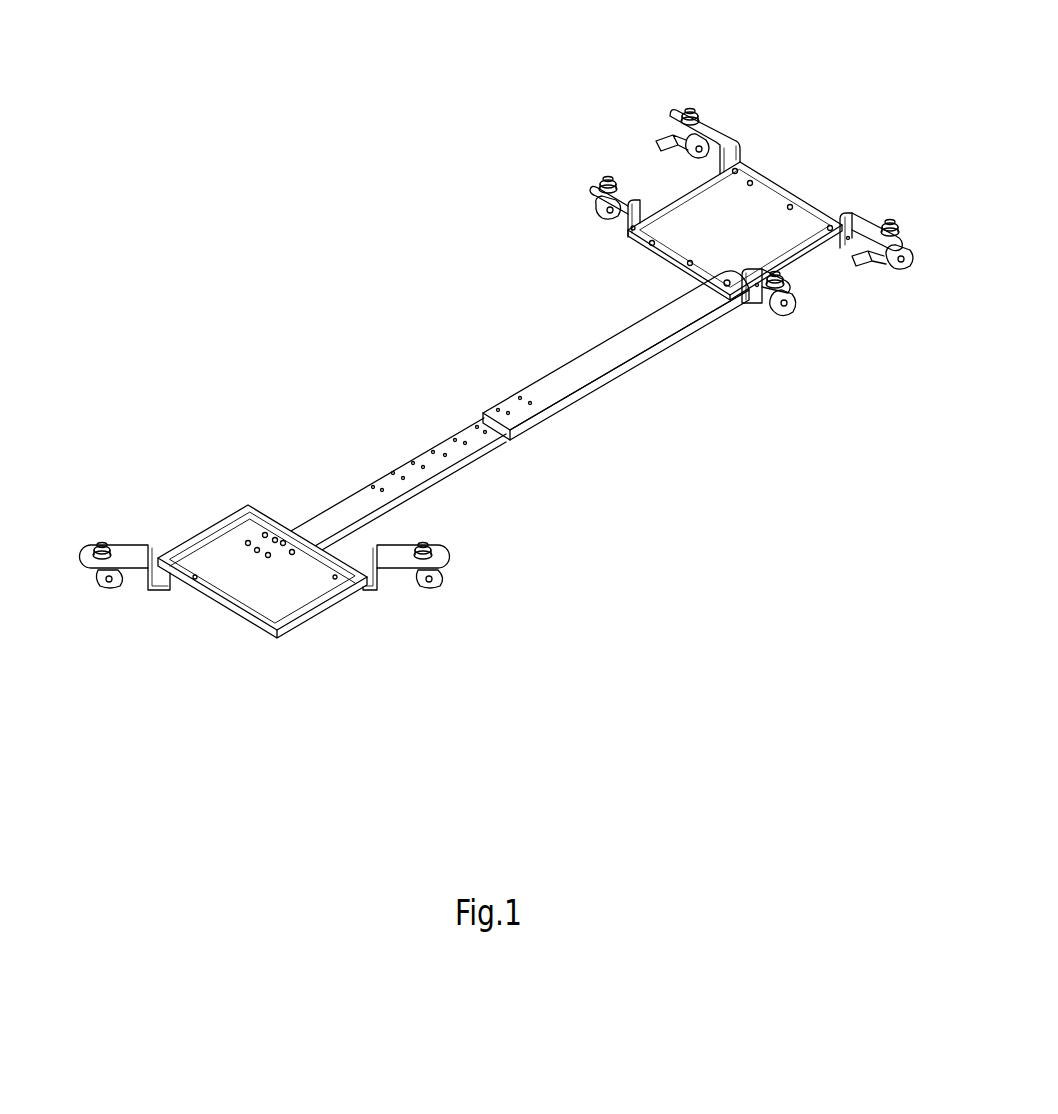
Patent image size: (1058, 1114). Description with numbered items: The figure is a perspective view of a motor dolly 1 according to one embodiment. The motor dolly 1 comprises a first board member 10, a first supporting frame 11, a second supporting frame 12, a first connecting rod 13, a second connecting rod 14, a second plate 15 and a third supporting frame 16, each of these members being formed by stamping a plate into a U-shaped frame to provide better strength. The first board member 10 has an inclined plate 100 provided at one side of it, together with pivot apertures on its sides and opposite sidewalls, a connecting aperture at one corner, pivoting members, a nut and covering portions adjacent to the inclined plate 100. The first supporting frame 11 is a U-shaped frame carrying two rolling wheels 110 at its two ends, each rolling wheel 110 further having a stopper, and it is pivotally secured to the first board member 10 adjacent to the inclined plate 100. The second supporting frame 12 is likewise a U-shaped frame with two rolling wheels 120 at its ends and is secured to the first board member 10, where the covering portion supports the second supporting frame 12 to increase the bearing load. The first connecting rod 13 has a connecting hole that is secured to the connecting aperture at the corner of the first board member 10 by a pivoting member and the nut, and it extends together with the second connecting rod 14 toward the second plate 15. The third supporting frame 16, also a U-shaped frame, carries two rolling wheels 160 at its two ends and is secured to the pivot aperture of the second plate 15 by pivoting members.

The motor dolly 1 is at (337, 125).
The first board member 10 is at (815, 277).
The inclined plate 100 is at (795, 181).
The first supporting frame 11 is at (722, 121).
The rolling wheel 110 is at (666, 119).
The second supporting frame 12 is at (629, 182).
The rolling wheel 120 is at (588, 211).
The first connecting rod 13 is at (668, 355).
The second connecting rod 14 is at (411, 441).
The second plate 15 is at (212, 508).
The third supporting frame 16 is at (165, 602).
The rolling wheel 160 is at (457, 569).